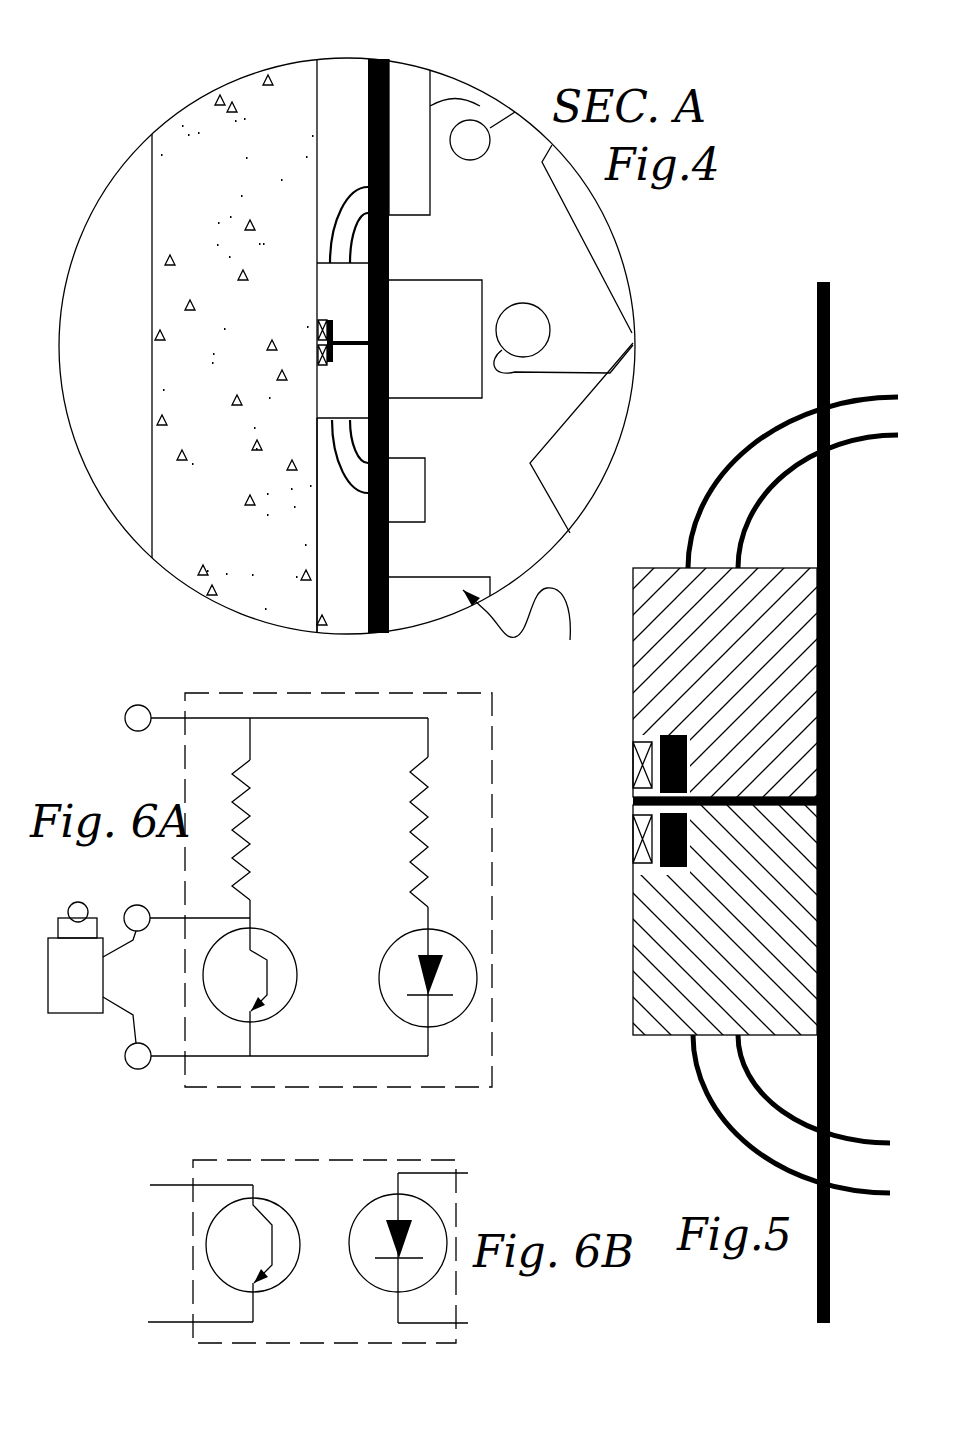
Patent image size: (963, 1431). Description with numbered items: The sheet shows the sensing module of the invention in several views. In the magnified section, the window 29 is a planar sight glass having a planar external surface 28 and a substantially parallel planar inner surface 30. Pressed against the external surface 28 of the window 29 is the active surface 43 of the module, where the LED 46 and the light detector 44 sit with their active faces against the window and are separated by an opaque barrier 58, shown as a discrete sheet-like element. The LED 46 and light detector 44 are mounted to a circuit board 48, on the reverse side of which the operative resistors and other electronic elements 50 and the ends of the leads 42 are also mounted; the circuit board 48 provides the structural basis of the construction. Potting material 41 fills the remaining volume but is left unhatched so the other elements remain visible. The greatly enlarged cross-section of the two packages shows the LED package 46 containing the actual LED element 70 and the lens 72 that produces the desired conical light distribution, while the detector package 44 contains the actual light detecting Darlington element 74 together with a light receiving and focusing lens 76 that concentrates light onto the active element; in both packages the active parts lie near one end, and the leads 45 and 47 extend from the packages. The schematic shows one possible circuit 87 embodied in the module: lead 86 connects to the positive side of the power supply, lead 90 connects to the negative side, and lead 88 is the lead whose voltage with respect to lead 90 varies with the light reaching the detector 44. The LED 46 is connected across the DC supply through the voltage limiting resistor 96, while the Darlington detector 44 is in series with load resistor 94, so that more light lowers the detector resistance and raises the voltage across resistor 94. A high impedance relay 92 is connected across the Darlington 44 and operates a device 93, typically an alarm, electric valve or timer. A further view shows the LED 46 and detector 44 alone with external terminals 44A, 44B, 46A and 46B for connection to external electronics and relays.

In FIG. 4, the planar external surface 28 is at (317, 540).
In FIG. 4, the window 29 is at (198, 400).
In FIG. 4, the planar inner surface 30 is at (152, 267).
In FIG. 4, the potting material 41 is at (340, 580).
In FIG. 4, the leads 42 is at (577, 368).
In FIG. 4, the active surface 43 is at (318, 90).
In FIG. 4, the light detector 44 is at (342, 290).
In FIG. 5, the light detector 44 is at (633, 637).
In FIG. 6A, the light detector 44 is at (283, 937).
In FIG. 6B, the light detector 44 is at (287, 1208).
In FIG. 4, the phototransistor leads 45 is at (343, 213).
In FIG. 5, the phototransistor leads 45 is at (743, 457).
In FIG. 4, the LED 46 is at (345, 388).
In FIG. 5, the LED 46 is at (633, 993).
In FIG. 6A, the LED 46 is at (385, 1008).
In FIG. 6B, the LED 46 is at (357, 1270).
In FIG. 4, the LED leads 47 is at (340, 460).
In FIG. 5, the LED leads 47 is at (752, 1157).
In FIG. 4, the circuit board 48 is at (390, 547).
In FIG. 5, the circuit board 48 is at (812, 1293).
In FIG. 4, the electronic elements 50 is at (432, 310).
In FIG. 4, the opaque barrier 58 is at (390, 383).
In FIG. 5, the opaque barrier 58 is at (633, 800).
In FIG. 5, the LED element 70 is at (672, 872).
In FIG. 5, the lens 72 is at (643, 822).
In FIG. 5, the light detecting element 74 is at (660, 735).
In FIG. 5, the lens 76 is at (643, 782).
In FIG. 6A, the lead 86 is at (130, 732).
In FIG. 4, the circuit 87 is at (527, 631).
In FIG. 6A, the circuit 87 is at (492, 963).
In FIG. 6A, the lead 88 is at (137, 905).
In FIG. 6A, the lead 90 is at (143, 1066).
In FIG. 6A, the relay 92 is at (92, 980).
In FIG. 6A, the device 93 is at (80, 902).
In FIG. 6A, the load resistor 94 is at (240, 852).
In FIG. 6A, the voltage dropping resistor 96 is at (417, 800).
In FIG. 6B, the phototransistor collector terminal 44A is at (175, 1190).
In FIG. 6B, the phototransistor emitter terminal 44B is at (171, 1322).
In FIG. 6B, the LED anode terminal 46A is at (468, 1177).
In FIG. 6B, the LED cathode terminal 46B is at (468, 1322).